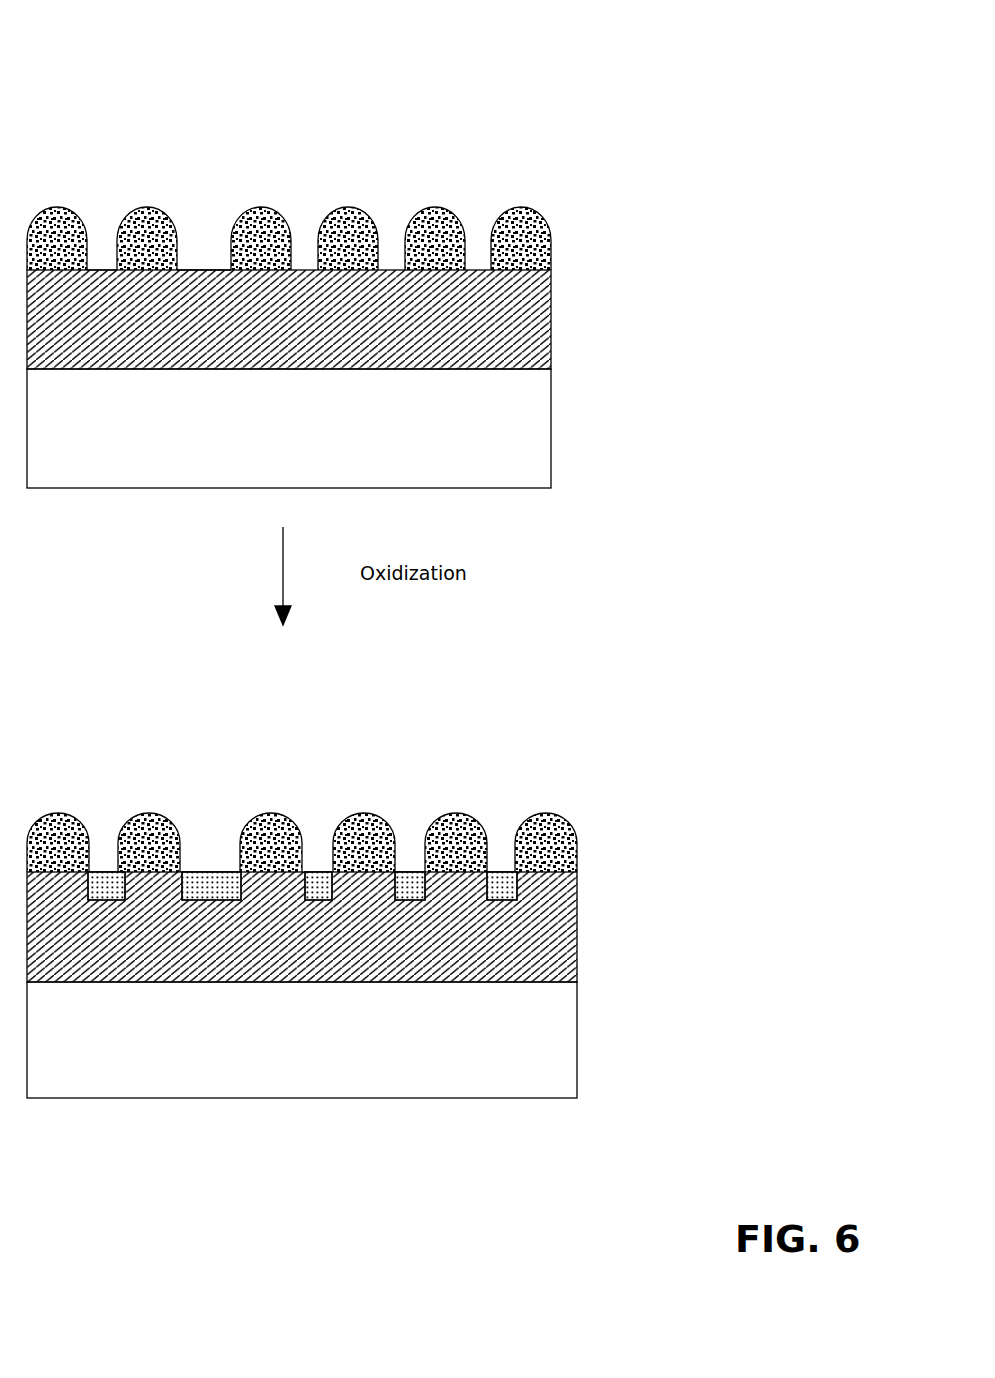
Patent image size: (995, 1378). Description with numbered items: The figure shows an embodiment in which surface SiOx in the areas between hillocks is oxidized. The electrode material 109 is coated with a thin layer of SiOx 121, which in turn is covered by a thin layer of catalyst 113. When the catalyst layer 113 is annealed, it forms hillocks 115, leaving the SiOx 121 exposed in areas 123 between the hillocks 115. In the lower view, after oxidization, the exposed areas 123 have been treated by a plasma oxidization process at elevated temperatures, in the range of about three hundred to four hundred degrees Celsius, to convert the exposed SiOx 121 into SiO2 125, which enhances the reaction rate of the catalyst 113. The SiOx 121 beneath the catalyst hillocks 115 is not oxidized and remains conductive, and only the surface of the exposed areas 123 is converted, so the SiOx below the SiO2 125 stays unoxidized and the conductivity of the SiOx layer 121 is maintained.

The electrode material 109 is at (302, 733).
The catalyst layer 113 is at (552, 208).
The hillocks 115 is at (435, 207).
The SiOx layer 121 is at (552, 293).
The exposed areas 123 is at (203, 271).
The SiO2 125 is at (210, 872).